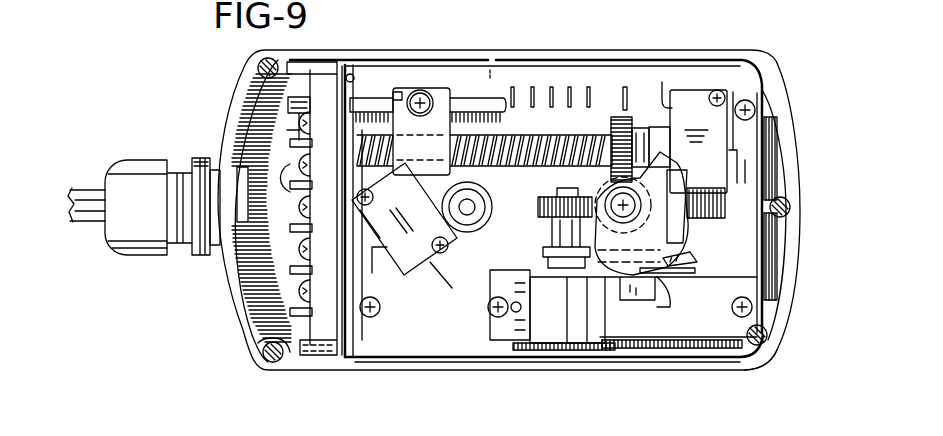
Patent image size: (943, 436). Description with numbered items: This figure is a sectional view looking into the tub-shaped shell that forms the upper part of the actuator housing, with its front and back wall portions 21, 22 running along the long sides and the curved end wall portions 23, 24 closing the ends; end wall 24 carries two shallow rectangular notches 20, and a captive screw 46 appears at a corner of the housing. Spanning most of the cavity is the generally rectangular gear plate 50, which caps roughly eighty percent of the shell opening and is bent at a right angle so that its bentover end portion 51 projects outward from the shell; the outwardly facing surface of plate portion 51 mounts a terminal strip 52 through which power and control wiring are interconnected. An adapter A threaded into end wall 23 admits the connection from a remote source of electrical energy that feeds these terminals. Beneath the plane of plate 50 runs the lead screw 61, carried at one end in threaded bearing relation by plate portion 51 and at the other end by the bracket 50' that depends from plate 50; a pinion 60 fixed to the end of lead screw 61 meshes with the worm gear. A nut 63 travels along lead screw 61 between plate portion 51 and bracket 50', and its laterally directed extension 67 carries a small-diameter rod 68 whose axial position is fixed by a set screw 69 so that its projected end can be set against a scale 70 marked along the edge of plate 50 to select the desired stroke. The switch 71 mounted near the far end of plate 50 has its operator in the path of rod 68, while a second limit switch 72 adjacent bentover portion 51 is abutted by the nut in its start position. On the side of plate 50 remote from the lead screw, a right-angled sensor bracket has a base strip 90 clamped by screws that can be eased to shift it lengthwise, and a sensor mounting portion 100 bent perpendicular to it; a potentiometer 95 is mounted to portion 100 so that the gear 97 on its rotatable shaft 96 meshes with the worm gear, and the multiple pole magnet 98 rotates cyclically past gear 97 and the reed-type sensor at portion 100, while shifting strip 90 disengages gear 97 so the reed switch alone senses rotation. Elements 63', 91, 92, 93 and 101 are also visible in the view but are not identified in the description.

The rectangular notches 20 is at (792, 147).
The front wall portion 21 is at (545, 47).
The back wall portion 22 is at (397, 375).
The end wall portion 23 is at (235, 97).
The end wall portion 24 is at (790, 307).
The captive screw 46 is at (263, 353).
The gear plate 50 is at (396, 237).
The bracket 50' is at (659, 90).
The bentover end portion 51 is at (340, 268).
The terminal strip 52 is at (290, 143).
The pinion 60 is at (620, 117).
The lead screw 61 is at (590, 133).
The nut 63 is at (484, 93).
The lead screw bearing 63' is at (484, 199).
The extension 67 is at (402, 92).
The rod 68 is at (367, 100).
The set screw 69 is at (422, 92).
The scale 70 is at (570, 88).
The switch 71 is at (698, 97).
The second limit switch 72 is at (443, 230).
The base strip 90 is at (703, 327).
The motor mount 91 is at (692, 300).
The bracket 92 is at (517, 312).
The mounting screws 93 is at (750, 102).
The potentiometer 95 is at (578, 343).
The rotatable shaft 96 is at (557, 247).
The gear 97 is at (545, 203).
The multiple pole magnet 98 is at (677, 228).
The sensor mounting portion 100 is at (682, 273).
The cam follower 101 is at (683, 243).
The adapter A is at (138, 160).